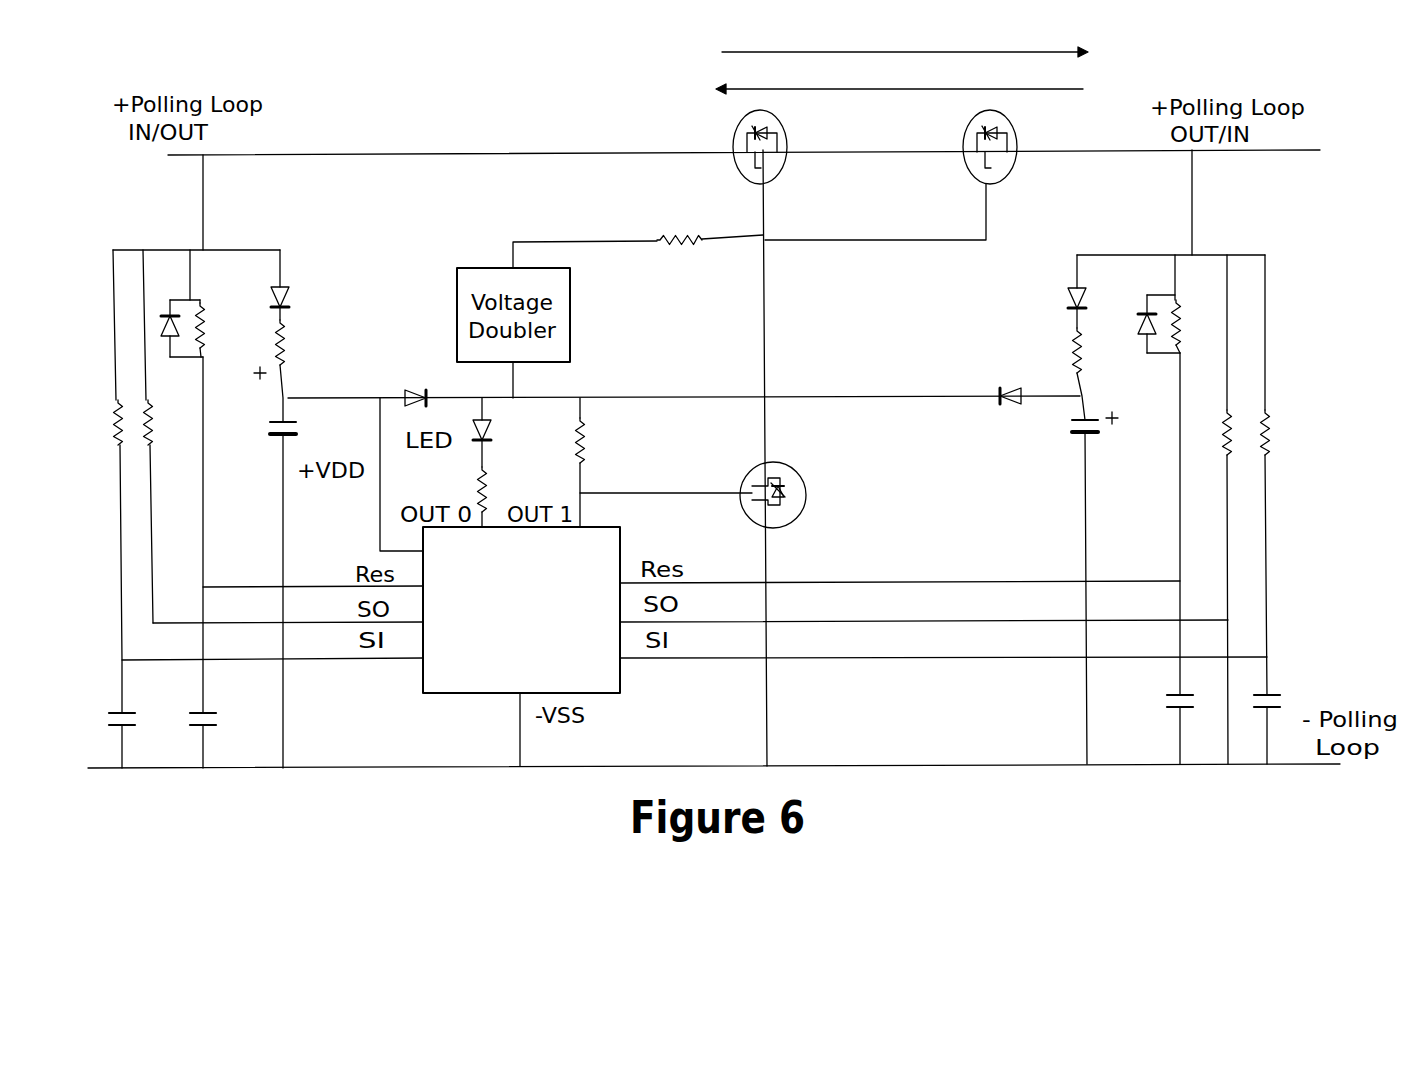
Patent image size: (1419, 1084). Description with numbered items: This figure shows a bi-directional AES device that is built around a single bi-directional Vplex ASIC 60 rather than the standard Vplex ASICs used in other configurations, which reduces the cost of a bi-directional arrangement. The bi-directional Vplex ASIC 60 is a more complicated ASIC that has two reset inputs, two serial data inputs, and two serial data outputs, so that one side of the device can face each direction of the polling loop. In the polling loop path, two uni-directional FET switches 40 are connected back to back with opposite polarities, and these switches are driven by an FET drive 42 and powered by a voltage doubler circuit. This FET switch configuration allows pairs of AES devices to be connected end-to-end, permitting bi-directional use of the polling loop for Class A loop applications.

The uni-directional FET switch 40 is at (785, 128).
The FET drive 42 is at (806, 481).
The bi-directional Vplex ASIC 60 is at (450, 697).